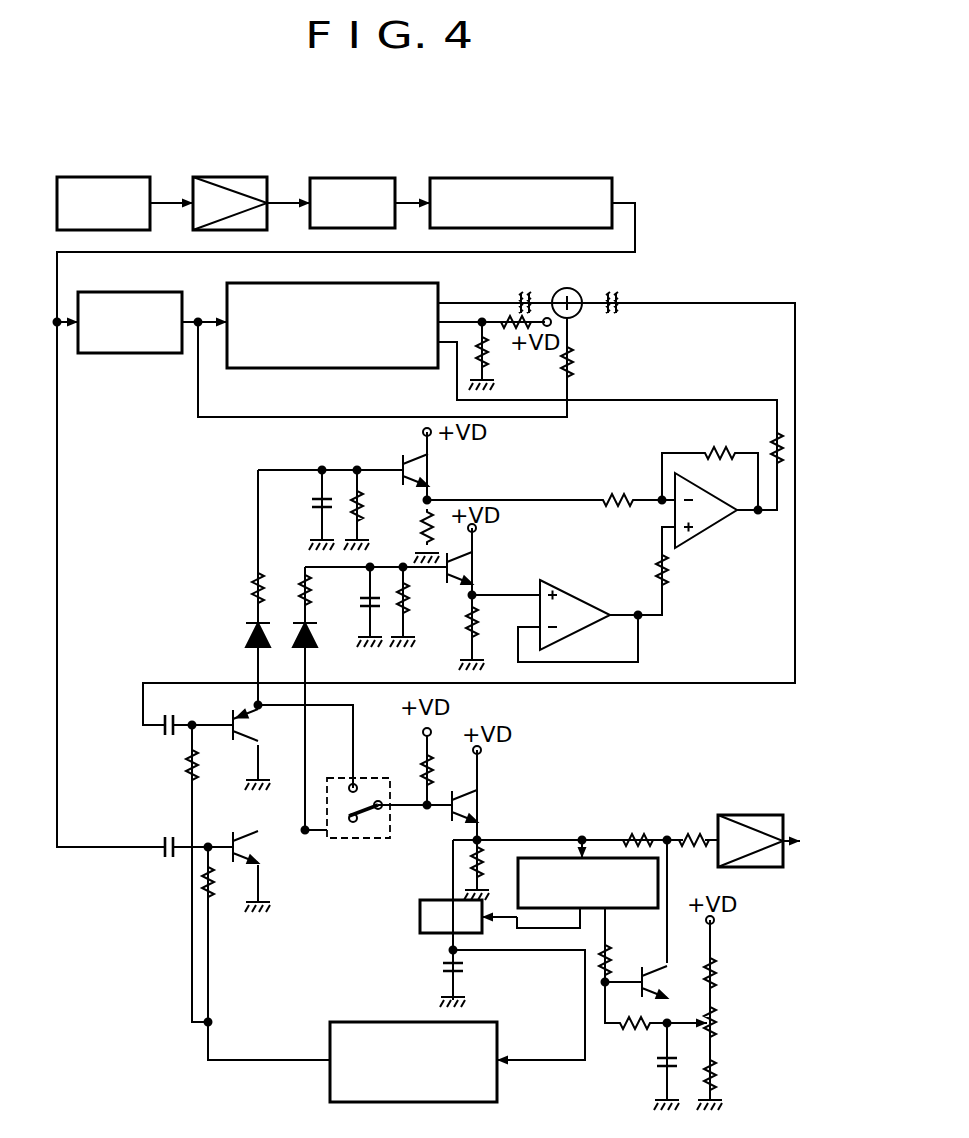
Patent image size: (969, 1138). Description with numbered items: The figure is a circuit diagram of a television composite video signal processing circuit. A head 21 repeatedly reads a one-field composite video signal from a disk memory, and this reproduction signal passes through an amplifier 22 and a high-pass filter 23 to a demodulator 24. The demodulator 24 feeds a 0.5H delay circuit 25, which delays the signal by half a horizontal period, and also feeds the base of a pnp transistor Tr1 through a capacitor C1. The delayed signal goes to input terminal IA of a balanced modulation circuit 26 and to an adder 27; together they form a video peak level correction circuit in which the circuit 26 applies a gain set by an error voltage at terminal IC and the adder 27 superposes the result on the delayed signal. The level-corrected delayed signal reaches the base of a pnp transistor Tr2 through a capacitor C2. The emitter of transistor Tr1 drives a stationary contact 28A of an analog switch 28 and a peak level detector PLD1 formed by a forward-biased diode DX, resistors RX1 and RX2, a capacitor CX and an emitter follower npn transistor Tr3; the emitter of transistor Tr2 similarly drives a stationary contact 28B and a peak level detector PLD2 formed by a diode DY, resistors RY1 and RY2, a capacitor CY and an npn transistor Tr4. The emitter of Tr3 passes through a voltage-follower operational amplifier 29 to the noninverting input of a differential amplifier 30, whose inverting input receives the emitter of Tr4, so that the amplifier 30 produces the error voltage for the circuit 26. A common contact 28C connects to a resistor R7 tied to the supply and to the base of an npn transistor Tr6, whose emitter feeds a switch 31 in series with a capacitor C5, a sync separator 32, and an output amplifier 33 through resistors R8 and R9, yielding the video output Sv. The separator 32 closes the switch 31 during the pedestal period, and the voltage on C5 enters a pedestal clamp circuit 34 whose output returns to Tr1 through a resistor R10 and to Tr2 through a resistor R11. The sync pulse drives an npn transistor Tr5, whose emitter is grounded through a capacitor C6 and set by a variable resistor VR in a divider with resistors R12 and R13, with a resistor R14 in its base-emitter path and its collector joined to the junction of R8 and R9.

The head 21 is at (131, 177).
The amplifier 22 is at (236, 177).
The high-pass filter 23 is at (339, 178).
The demodulator 24 is at (494, 178).
The 0.5H delay circuit 25 is at (150, 353).
The balanced modulation circuit 26 is at (336, 368).
The adder 27 is at (578, 293).
The analog switch 28 is at (350, 776).
The stationary contact 28A is at (354, 824).
The stationary contact 28B is at (358, 784).
The common contact 28C is at (380, 812).
The operational amplifier 29 is at (586, 582).
The differential amplifier 30 is at (715, 526).
The switch 31 is at (419, 916).
The sync separator 32 is at (646, 908).
The output amplifier 33 is at (744, 812).
The pedestal clamp circuit 34 is at (498, 1022).
The pnp transistor Tr1 is at (260, 858).
The pnp transistor Tr2 is at (242, 737).
The emitter follower npn transistor Tr3 is at (467, 573).
The emitter follower npn transistor Tr4 is at (428, 470).
The npn transistor Tr5 is at (668, 982).
The npn transistor Tr6 is at (481, 808).
The resistor R7 is at (454, 772).
The resistor R8 is at (632, 831).
The resistor R9 is at (686, 831).
The resistor R10 is at (218, 906).
The resistor R11 is at (199, 783).
The resistor R12 is at (718, 964).
The resistor R13 is at (718, 1074).
The resistor R14 is at (622, 1030).
The variable resistor VR is at (724, 1026).
The capacitor C1 is at (164, 834).
The capacitor C2 is at (162, 742).
The capacitor C5 is at (442, 978).
The capacitor C6 is at (664, 1082).
The capacitor CX is at (362, 612).
The capacitor CY is at (310, 500).
The resistor RX1 is at (310, 580).
The resistor RX2 is at (395, 610).
The resistor RY1 is at (252, 578).
The resistor RY2 is at (357, 481).
The forward-biased diode DX is at (318, 646).
The forward-biased diode DY is at (244, 644).
The peak level detector PLD1 is at (299, 562).
The peak level detector PLD2 is at (256, 556).
The video signal output Sv is at (790, 852).